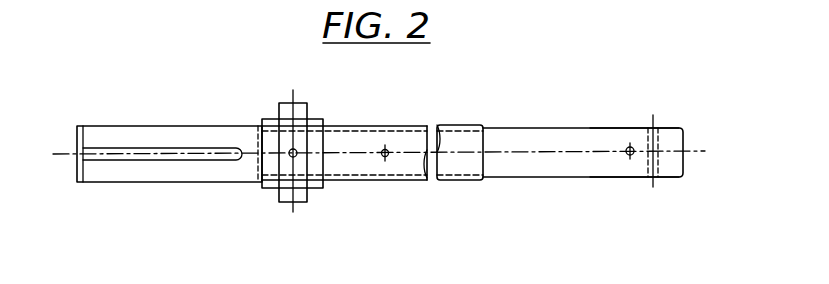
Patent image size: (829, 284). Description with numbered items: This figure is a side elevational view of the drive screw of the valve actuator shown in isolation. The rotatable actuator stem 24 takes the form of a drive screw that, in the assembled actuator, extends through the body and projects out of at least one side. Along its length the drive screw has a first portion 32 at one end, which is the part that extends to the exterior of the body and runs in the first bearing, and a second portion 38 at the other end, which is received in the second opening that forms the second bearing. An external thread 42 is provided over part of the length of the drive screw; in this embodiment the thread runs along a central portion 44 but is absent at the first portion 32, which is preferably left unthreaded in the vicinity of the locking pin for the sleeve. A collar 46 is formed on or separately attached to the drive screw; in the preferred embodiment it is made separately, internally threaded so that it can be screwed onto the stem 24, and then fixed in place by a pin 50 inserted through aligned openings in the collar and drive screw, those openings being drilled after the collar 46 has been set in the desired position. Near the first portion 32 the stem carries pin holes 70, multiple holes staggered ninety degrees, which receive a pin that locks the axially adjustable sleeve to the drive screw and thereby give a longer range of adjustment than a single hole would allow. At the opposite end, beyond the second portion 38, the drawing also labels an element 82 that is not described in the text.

The actuator stem 24 is at (530, 128).
The first portion 32 is at (597, 128).
The second portion 38 is at (343, 135).
The external thread 42 is at (413, 182).
The central portion 44 is at (347, 182).
The collar 46 is at (302, 103).
The pin 50 is at (290, 157).
The pin holes 70 is at (628, 156).
The slotted shaft 82 is at (106, 151).